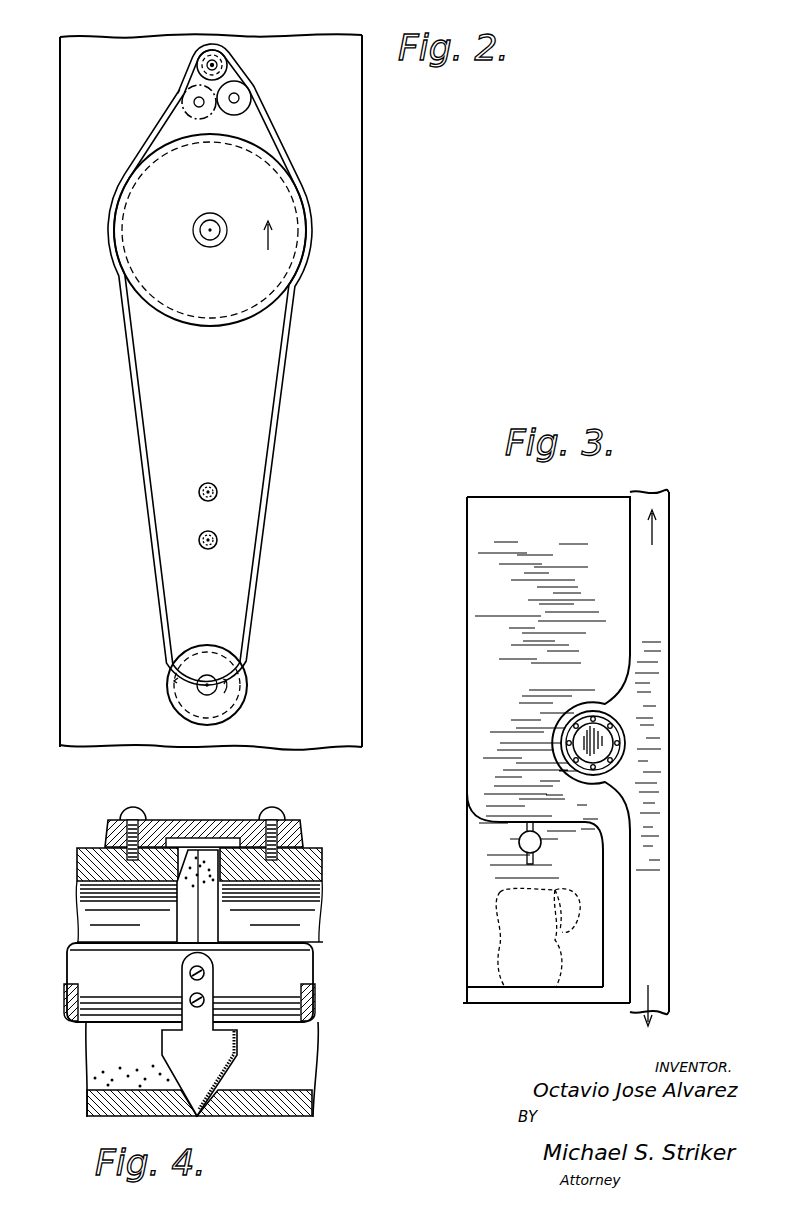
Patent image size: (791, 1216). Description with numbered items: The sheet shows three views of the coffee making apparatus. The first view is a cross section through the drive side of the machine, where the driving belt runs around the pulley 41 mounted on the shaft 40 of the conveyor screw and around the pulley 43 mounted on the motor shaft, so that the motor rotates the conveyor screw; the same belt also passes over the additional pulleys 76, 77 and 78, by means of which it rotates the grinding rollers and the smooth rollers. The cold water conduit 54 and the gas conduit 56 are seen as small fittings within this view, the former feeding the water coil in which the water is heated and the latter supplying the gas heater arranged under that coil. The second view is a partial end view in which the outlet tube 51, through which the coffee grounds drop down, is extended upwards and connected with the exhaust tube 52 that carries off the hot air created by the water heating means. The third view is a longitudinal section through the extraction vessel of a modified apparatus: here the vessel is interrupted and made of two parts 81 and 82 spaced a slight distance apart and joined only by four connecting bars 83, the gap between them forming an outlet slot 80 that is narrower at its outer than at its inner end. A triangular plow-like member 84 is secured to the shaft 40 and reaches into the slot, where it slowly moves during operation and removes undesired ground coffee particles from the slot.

In FIG. 4, the shaft 40 is at (292, 973).
In FIG. 2, the pulley 41 is at (116, 230).
In FIG. 2, the pulley 43 is at (183, 688).
In FIG. 3, the outlet tube 51 is at (652, 911).
In FIG. 3, the exhaust tube 52 is at (655, 598).
In FIG. 2, the cold water conduit 54 is at (217, 492).
In FIG. 2, the gas conduit 56 is at (217, 540).
In FIG. 2, the additional pulley 76 is at (212, 53).
In FIG. 2, the additional pulley 77 is at (181, 105).
In FIG. 2, the additional pulley 78 is at (253, 104).
In FIG. 4, the outlet slot 80 is at (197, 900).
In FIG. 4, the extraction vessel part 81 is at (80, 902).
In FIG. 4, the extraction vessel part 82 is at (312, 920).
In FIG. 4, the connecting bar 83 is at (228, 822).
In FIG. 4, the plow-like member 84 is at (215, 1058).